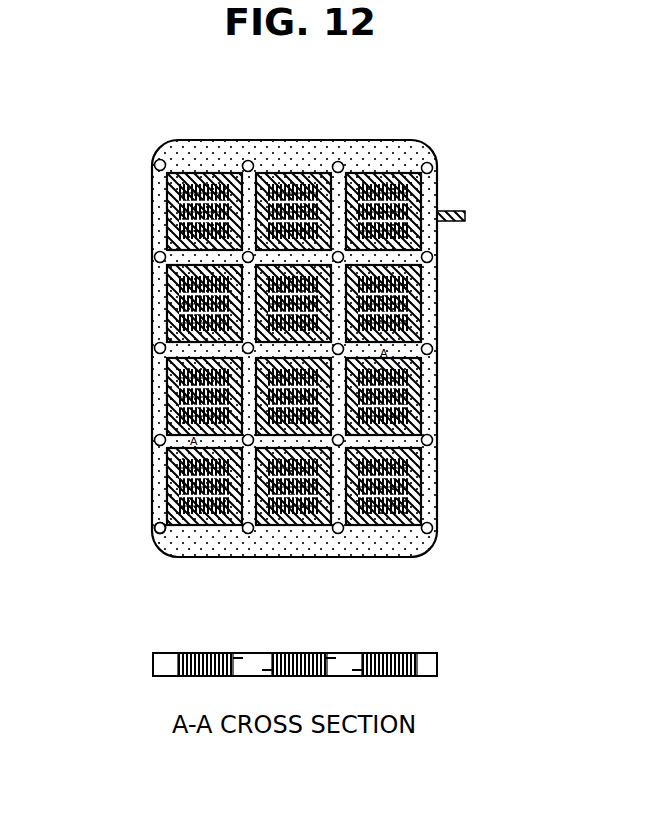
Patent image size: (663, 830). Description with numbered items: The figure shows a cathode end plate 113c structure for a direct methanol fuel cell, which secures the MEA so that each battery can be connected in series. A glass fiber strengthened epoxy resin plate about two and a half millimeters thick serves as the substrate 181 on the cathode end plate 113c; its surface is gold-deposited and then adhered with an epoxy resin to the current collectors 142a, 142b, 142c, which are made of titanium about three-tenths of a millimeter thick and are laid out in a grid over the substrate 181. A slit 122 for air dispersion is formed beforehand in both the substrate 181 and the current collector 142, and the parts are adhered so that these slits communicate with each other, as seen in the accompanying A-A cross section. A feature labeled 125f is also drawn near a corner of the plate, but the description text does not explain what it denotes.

The substrate 181 is at (173, 158).
The cathode end plate 113c is at (437, 178).
The current collector 142a is at (437, 232).
The current collector 142b is at (162, 310).
The current collector 142c is at (437, 308).
The fixing hole 125f is at (158, 520).
The current collector 142 is at (175, 652).
The slit 122 is at (283, 652).